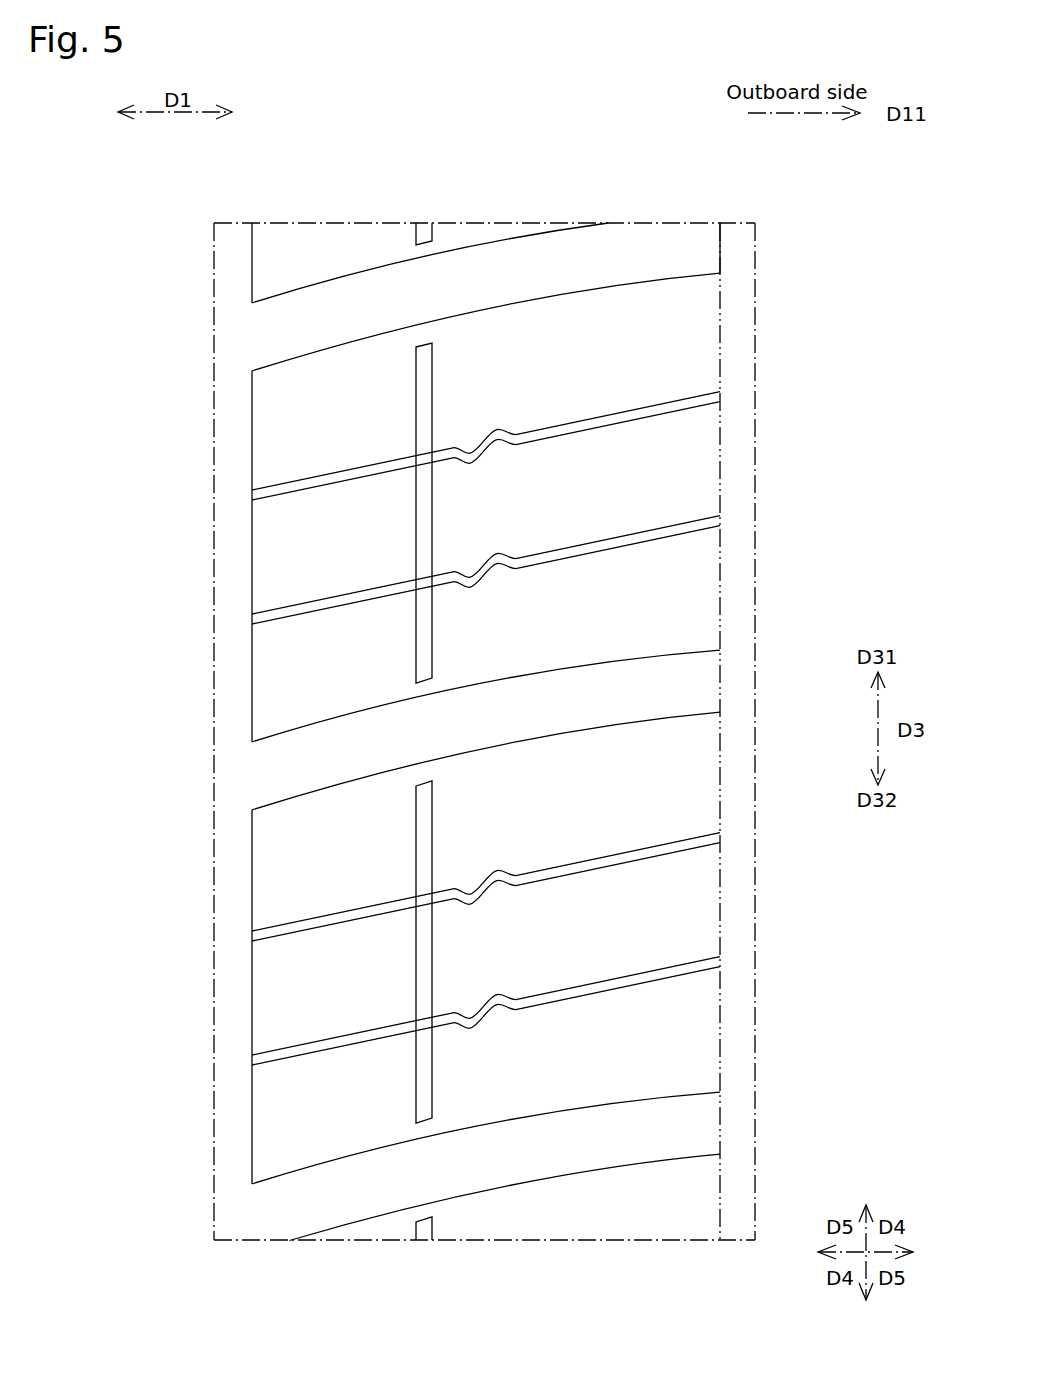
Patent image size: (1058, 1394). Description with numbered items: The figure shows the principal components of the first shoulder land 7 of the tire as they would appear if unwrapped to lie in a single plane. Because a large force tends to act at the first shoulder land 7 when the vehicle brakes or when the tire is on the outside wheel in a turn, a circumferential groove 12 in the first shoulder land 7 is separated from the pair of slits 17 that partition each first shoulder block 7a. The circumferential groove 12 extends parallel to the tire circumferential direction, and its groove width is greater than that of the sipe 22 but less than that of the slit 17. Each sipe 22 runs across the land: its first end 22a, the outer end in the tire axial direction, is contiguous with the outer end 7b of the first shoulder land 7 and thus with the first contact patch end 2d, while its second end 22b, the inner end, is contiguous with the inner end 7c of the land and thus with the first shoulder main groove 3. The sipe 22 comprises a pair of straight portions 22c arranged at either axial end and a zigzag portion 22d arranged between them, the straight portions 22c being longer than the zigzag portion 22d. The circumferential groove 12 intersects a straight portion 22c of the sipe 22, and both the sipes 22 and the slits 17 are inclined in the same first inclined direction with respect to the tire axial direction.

The first shoulder main groove 3 is at (232, 252).
The first shoulder land 7 is at (470, 232).
The first shoulder block 7a is at (266, 680).
The outer end 7b is at (722, 316).
The inner end 7c is at (250, 272).
The first contact patch end 2d is at (722, 249).
The circumferential groove 12 is at (433, 372).
The slit 17 is at (265, 337).
The sipe 22 is at (694, 439).
The first end 22a is at (722, 395).
The second end 22b is at (253, 488).
The straight portion 22c is at (331, 480).
The zigzag portion 22d is at (483, 440).